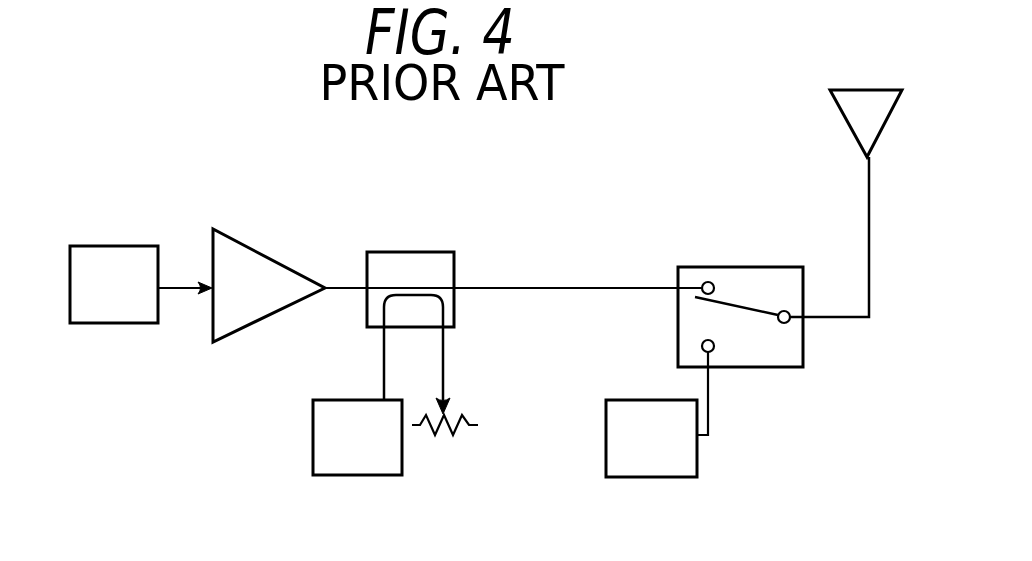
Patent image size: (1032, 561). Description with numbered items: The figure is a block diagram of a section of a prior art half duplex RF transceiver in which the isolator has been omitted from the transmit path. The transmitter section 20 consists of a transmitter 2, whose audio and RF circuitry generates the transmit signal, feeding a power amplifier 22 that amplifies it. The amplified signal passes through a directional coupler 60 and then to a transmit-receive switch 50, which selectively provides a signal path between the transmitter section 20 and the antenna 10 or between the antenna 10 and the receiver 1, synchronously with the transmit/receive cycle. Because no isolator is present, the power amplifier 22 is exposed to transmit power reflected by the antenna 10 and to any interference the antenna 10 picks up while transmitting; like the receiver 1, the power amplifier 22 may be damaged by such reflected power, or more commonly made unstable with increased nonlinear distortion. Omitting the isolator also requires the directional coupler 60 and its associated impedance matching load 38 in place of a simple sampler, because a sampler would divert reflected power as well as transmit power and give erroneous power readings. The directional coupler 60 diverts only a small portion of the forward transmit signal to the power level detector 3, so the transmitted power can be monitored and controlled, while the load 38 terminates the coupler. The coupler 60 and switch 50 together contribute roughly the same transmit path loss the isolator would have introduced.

The receiver 1 is at (606, 420).
The transmitter 2 is at (110, 243).
The power level detector 3 is at (313, 410).
The antenna 10 is at (860, 156).
The transmitter section 20 is at (348, 247).
The power amplifier 22 is at (245, 244).
The impedance matching load 38 is at (453, 407).
The transmit-receive switch 50 is at (723, 267).
The directional coupler 60 is at (395, 252).